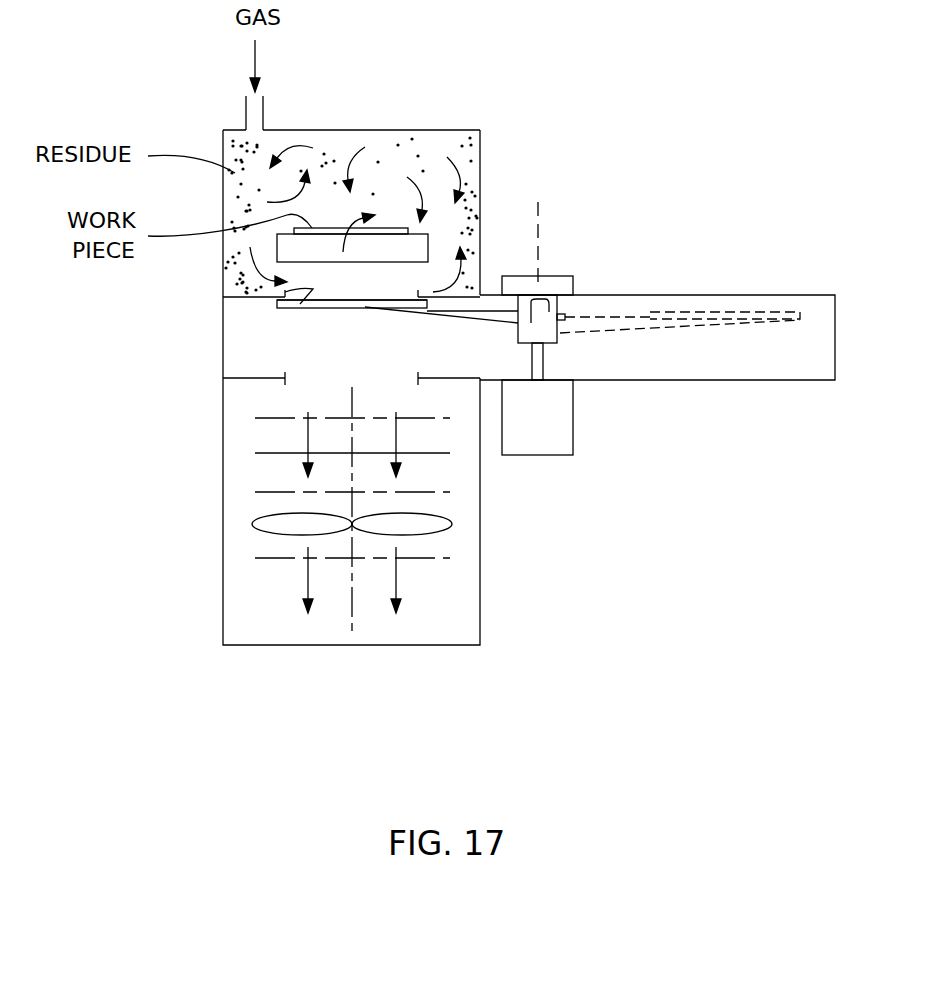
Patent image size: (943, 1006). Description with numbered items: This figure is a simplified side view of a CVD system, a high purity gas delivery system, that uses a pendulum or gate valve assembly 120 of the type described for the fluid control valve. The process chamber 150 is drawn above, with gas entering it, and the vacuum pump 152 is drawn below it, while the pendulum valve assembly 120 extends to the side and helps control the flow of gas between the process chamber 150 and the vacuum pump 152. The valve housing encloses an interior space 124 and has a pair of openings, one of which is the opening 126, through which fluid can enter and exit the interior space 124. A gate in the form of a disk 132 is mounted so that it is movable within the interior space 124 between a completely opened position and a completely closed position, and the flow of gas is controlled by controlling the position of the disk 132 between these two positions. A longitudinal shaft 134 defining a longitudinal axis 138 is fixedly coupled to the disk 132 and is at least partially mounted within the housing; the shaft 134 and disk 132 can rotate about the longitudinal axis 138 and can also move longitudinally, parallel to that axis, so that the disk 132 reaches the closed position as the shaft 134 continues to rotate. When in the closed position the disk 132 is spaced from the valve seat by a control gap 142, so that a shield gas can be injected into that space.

The pendulum valve assembly 120 is at (716, 262).
The interior space 124 is at (336, 361).
The opening 126 is at (375, 297).
The disk 132 is at (389, 325).
The longitudinal shaft 134 is at (545, 352).
The longitudinal axis 138 is at (540, 214).
The control gap 142 is at (353, 308).
The process chamber 150 is at (402, 117).
The vacuum pump 152 is at (262, 665).